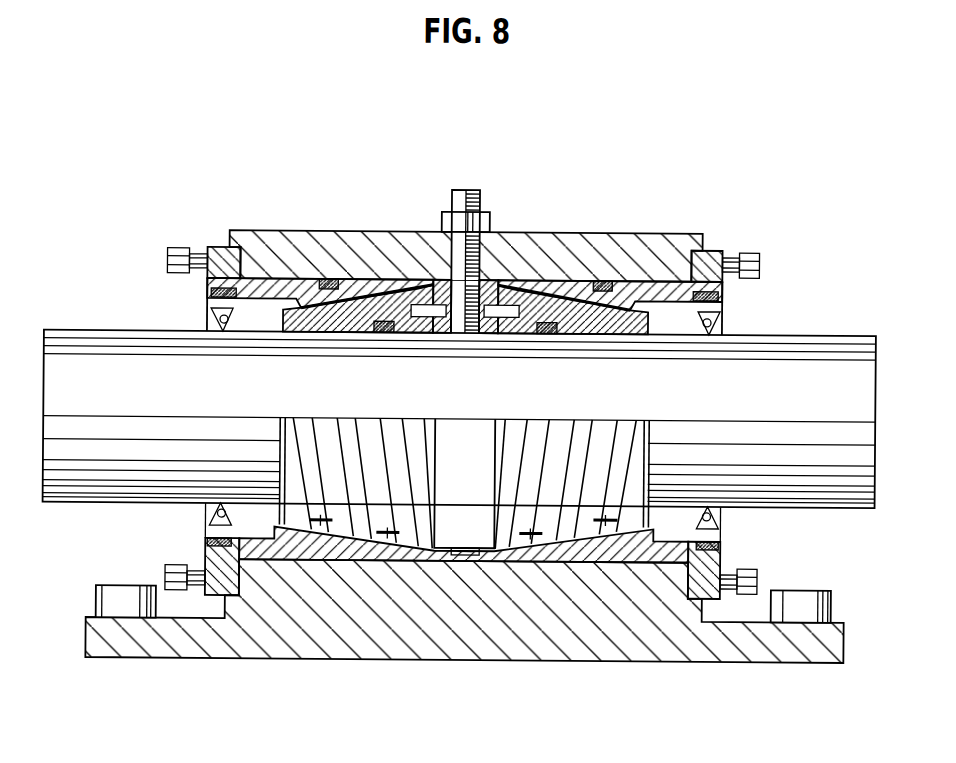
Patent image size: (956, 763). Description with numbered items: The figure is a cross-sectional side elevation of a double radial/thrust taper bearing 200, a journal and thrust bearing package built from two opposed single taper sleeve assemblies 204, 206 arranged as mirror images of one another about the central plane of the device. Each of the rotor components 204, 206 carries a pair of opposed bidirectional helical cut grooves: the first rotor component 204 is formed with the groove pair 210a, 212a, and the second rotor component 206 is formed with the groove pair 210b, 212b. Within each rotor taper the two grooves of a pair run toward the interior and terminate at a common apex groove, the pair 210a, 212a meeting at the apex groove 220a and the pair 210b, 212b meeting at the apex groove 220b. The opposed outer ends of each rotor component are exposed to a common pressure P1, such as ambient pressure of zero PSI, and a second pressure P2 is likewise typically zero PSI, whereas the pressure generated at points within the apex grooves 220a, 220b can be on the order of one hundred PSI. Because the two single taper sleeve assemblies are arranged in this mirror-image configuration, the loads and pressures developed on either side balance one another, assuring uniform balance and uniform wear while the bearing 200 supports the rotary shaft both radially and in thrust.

The double radial/thrust taper bearing 200 is at (541, 279).
The single taper sleeve assembly 204 is at (360, 562).
The single taper sleeve assembly 206 is at (568, 540).
The bidirectional helical groove 210a is at (300, 514).
The bidirectional helical groove 210b is at (637, 520).
The bidirectional helical groove 212a is at (398, 512).
The bidirectional helical groove 212b is at (532, 498).
The apex groove 220a is at (355, 303).
The apex groove 220b is at (573, 298).
The common pressure P1 is at (262, 310).
The pressure P2 is at (468, 186).